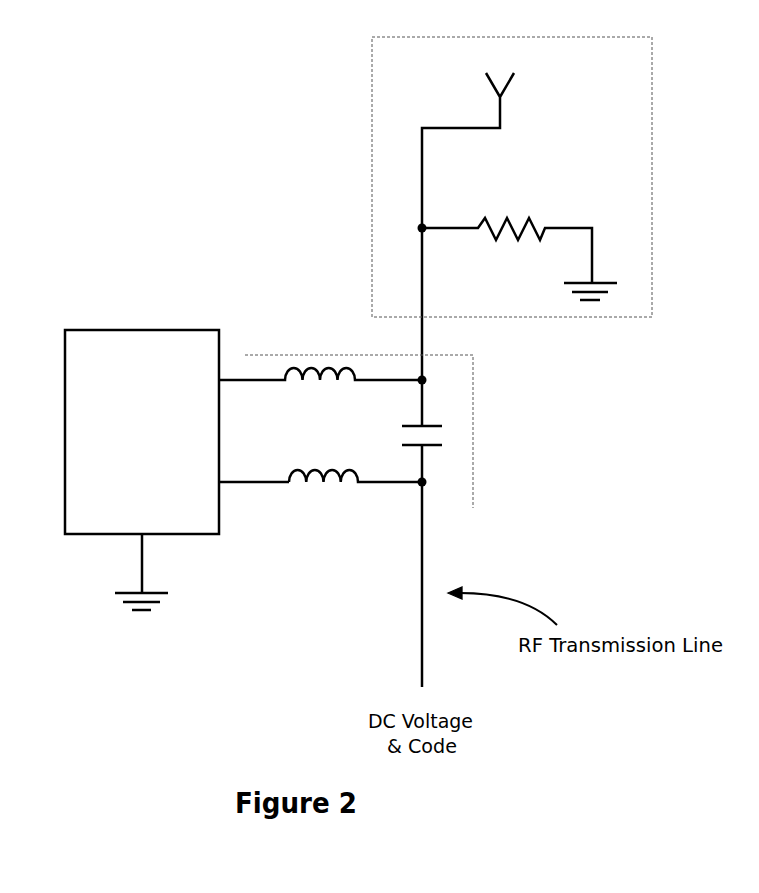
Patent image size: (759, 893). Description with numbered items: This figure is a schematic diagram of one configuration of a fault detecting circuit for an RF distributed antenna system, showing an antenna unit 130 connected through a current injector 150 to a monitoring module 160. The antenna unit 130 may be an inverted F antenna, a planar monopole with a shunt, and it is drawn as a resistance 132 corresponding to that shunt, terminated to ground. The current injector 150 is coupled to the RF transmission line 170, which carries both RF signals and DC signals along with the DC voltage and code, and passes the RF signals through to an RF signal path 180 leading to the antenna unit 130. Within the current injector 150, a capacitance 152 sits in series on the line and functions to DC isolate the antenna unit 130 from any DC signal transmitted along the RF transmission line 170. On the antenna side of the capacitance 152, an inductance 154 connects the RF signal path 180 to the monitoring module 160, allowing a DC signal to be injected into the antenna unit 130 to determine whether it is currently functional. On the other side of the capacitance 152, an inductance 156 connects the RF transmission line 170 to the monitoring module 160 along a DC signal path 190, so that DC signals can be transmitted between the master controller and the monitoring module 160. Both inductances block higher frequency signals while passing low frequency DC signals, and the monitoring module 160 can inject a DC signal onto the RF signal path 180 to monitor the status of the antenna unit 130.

The antenna unit 130 is at (653, 173).
The resistance 132 is at (507, 215).
The current injector 150 is at (335, 353).
The capacitance 152 is at (443, 425).
The inductance 154 is at (307, 385).
The inductance 156 is at (315, 487).
The monitoring module 160 is at (118, 328).
The RF transmission line 170 is at (420, 620).
The RF signal path 180 is at (425, 333).
The DC signal path 190 is at (224, 485).